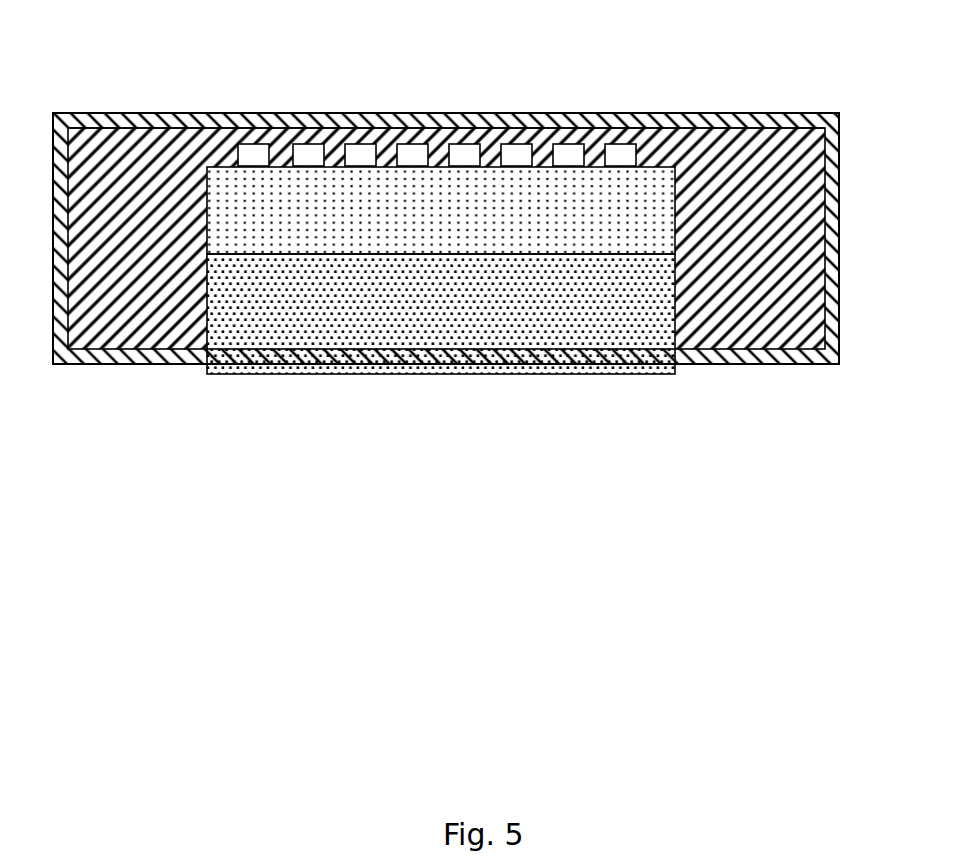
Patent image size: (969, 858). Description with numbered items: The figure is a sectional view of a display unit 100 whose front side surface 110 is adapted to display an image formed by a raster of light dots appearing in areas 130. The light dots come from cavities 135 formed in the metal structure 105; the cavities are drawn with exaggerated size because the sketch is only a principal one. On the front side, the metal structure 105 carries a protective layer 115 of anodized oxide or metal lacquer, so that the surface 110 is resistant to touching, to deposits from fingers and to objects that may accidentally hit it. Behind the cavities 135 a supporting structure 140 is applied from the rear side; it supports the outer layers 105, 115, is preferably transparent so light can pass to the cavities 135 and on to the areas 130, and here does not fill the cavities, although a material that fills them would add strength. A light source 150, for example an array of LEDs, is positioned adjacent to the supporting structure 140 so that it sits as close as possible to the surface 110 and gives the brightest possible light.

The display unit 100 is at (114, 93).
The metal structure 105 is at (730, 318).
The surface 110 is at (708, 113).
The protective layer 115 is at (191, 115).
The areas 130 is at (518, 113).
The cavities 135 is at (508, 152).
The supporting structure 140 is at (377, 228).
The light source 150 is at (570, 340).